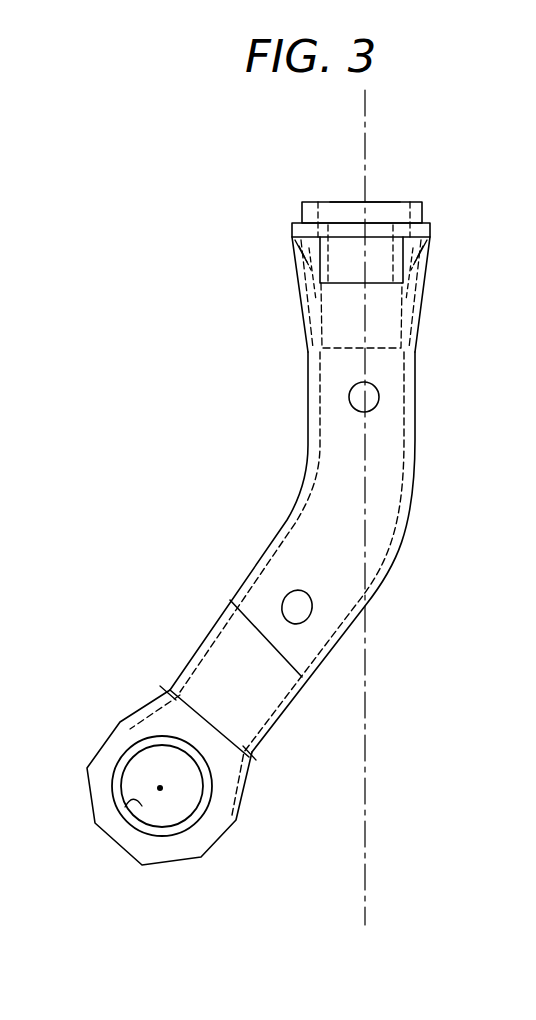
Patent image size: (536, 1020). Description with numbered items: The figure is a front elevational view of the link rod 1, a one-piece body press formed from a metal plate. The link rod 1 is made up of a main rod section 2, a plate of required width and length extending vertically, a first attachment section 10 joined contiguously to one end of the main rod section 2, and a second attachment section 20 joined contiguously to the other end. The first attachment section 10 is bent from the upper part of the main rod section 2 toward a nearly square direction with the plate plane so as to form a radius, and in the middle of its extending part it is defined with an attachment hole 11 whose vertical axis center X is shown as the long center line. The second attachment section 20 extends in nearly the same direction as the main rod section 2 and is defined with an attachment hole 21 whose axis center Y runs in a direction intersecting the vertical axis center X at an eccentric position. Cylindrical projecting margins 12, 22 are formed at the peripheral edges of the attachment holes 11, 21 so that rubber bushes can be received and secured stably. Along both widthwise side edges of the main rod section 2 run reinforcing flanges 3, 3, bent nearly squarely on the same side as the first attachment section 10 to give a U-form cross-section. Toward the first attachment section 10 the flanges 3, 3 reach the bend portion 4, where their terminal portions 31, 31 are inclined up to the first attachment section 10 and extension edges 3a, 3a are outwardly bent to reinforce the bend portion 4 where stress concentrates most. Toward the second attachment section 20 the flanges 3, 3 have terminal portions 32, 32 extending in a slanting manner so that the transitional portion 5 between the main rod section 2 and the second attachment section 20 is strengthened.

The link rod 1 is at (488, 200).
The main rod section 2 is at (365, 503).
The reinforcing flange 3 is at (288, 517).
The extension edge 3a is at (306, 268).
The bend portion 4 is at (352, 238).
The transitional portion 5 is at (208, 722).
The first attachment section 10 is at (292, 226).
The attachment hole 11 is at (316, 216).
The cylindrical projecting margin 12 is at (360, 212).
The second attachment section 20 is at (218, 818).
The attachment hole 21 is at (143, 815).
The cylindrical projecting margin 22 is at (188, 823).
The terminal portion 31 is at (300, 246).
The terminal portion 32 is at (153, 694).
The vertical axis center X is at (366, 112).
The attachment hole axis center Y is at (160, 788).